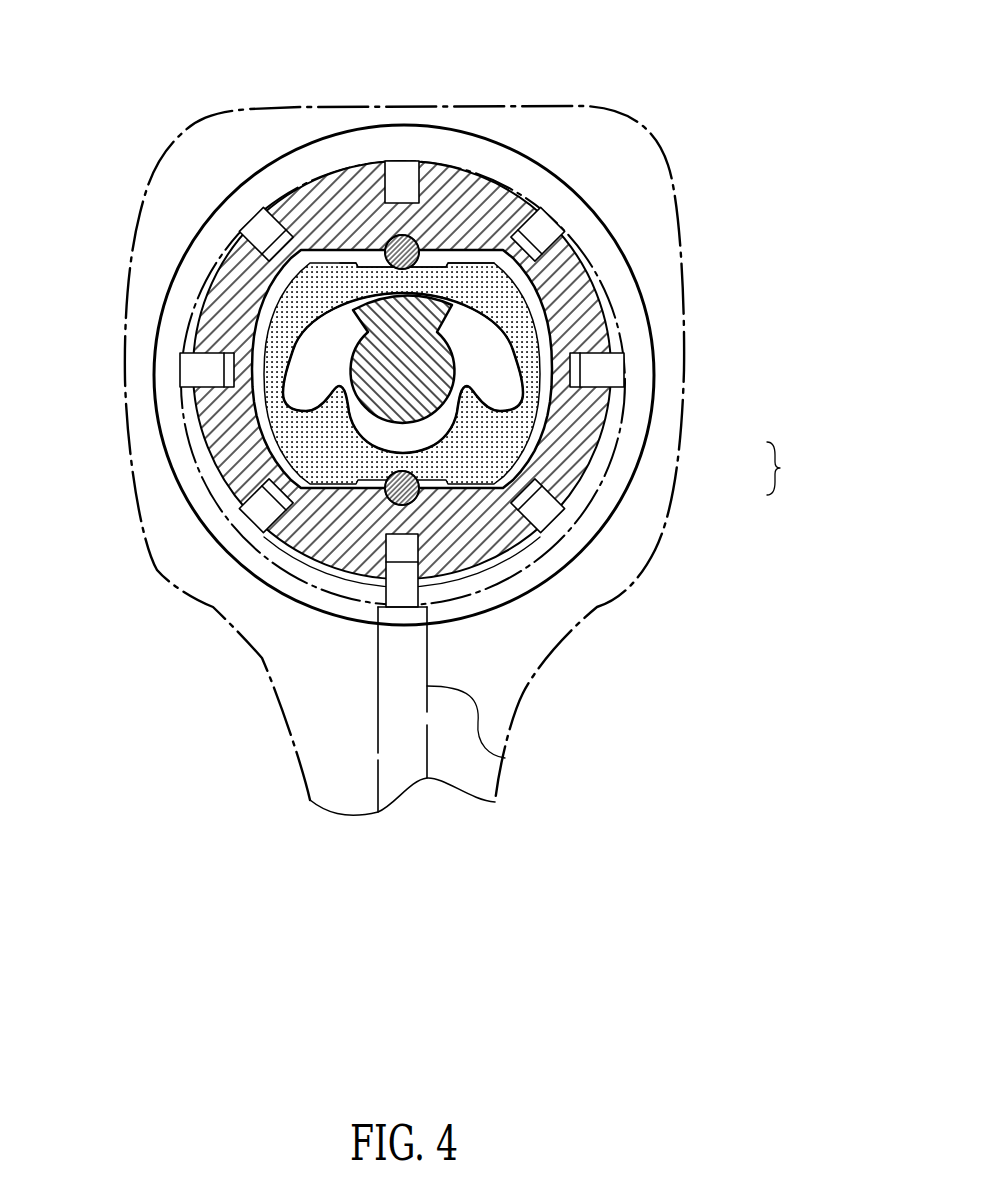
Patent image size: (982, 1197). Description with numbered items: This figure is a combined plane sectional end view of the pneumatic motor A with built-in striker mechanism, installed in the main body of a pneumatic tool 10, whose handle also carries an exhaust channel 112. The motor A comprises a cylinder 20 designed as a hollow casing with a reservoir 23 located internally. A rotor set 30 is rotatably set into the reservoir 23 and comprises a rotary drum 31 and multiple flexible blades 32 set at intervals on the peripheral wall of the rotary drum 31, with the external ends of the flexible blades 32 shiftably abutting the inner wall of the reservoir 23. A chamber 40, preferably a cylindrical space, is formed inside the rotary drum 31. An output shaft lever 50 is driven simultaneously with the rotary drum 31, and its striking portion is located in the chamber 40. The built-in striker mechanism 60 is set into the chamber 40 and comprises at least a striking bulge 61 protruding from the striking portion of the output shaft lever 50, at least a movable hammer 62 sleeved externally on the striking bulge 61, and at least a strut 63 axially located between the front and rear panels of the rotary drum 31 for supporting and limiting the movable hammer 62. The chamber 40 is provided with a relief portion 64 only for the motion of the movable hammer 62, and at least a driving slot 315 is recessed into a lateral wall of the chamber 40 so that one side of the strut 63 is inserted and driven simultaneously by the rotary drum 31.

The pneumatic tool 10 is at (275, 778).
The cylinder 20 is at (282, 150).
The reservoir 23 is at (284, 562).
The rotor set 30 is at (788, 468).
The rotary drum 31 is at (538, 433).
The flexible blades 32 is at (536, 478).
The driving slot 315 is at (419, 256).
The chamber 40 is at (350, 484).
The output shaft lever 50 is at (367, 397).
The built-in striker mechanism 60 is at (273, 315).
The striking bulge 61 is at (466, 337).
The movable hammer 62 is at (498, 253).
The strut 63 is at (391, 241).
The relief portion 64 is at (238, 226).
The exhaust channel 112 is at (505, 758).
The pneumatic motor A is at (592, 187).